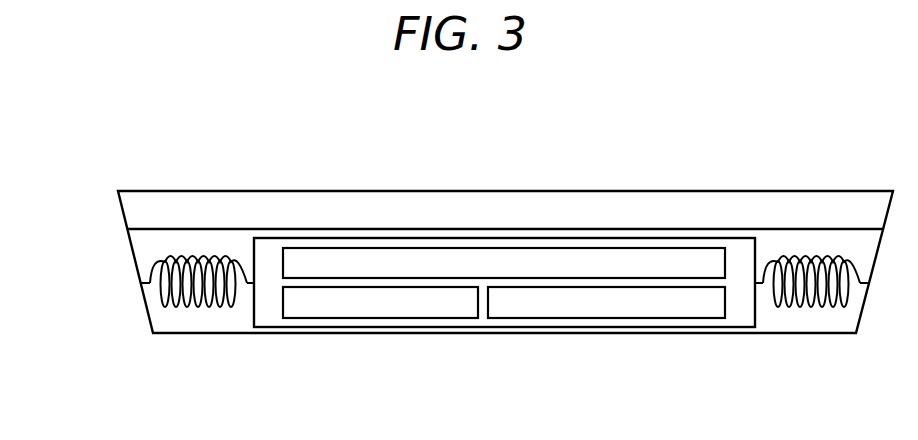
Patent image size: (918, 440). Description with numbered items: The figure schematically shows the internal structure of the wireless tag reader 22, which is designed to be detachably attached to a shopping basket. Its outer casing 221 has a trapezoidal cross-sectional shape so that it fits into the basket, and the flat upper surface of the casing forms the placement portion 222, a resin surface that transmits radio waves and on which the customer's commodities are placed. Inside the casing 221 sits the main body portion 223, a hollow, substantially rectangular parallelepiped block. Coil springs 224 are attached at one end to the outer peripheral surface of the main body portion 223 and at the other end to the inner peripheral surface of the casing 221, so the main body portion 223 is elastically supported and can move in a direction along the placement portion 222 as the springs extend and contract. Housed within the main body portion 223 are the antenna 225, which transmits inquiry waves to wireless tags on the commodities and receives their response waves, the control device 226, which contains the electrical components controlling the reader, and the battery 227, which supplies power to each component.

The wireless tag reader 22 is at (829, 137).
The casing 221 is at (131, 246).
The placement portion 222 is at (349, 207).
The main body portion 223 is at (493, 327).
The coil spring 224 is at (812, 306).
The antenna 225 is at (612, 249).
The control device 226 is at (380, 318).
The battery 227 is at (623, 318).